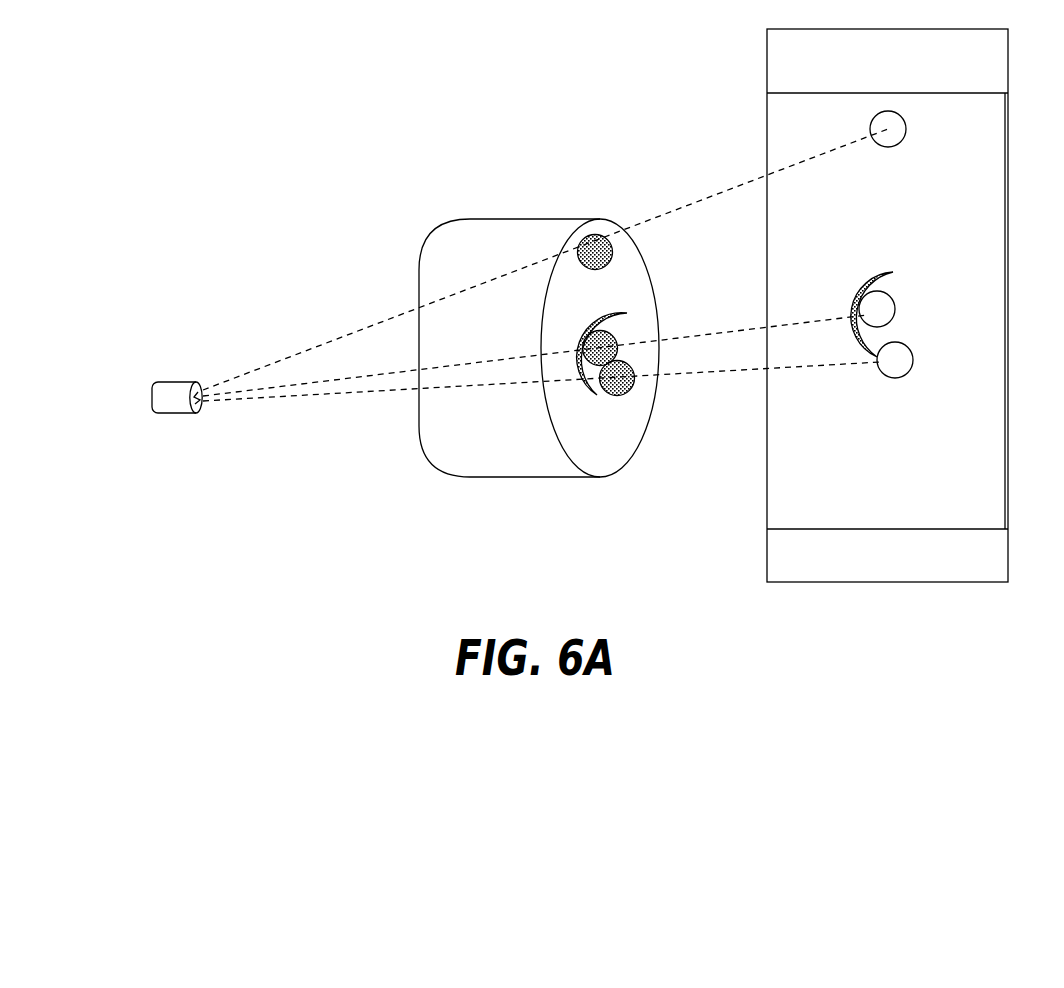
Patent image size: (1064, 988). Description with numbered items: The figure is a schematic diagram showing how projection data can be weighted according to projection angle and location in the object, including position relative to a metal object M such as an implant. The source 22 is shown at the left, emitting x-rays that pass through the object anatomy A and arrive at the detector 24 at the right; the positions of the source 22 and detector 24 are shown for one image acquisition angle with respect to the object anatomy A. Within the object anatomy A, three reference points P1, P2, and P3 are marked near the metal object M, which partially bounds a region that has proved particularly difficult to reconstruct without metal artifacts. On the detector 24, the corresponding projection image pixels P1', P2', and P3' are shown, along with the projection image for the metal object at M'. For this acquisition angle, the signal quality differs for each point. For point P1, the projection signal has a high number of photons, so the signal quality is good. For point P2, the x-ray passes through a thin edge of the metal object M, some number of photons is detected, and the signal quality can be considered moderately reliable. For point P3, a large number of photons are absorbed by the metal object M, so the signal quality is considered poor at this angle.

The source 22 is at (159, 382).
The detector 24 is at (917, 566).
The object anatomy A is at (502, 456).
The reference point P1 is at (586, 225).
The reference point P2 is at (651, 408).
The reference point P3 is at (642, 320).
The metal object M is at (557, 349).
The projection image pixel P1' is at (916, 129).
The projection image pixel P2' is at (920, 368).
The projection image pixel P3' is at (916, 301).
The projection image for the metal object M' is at (844, 281).